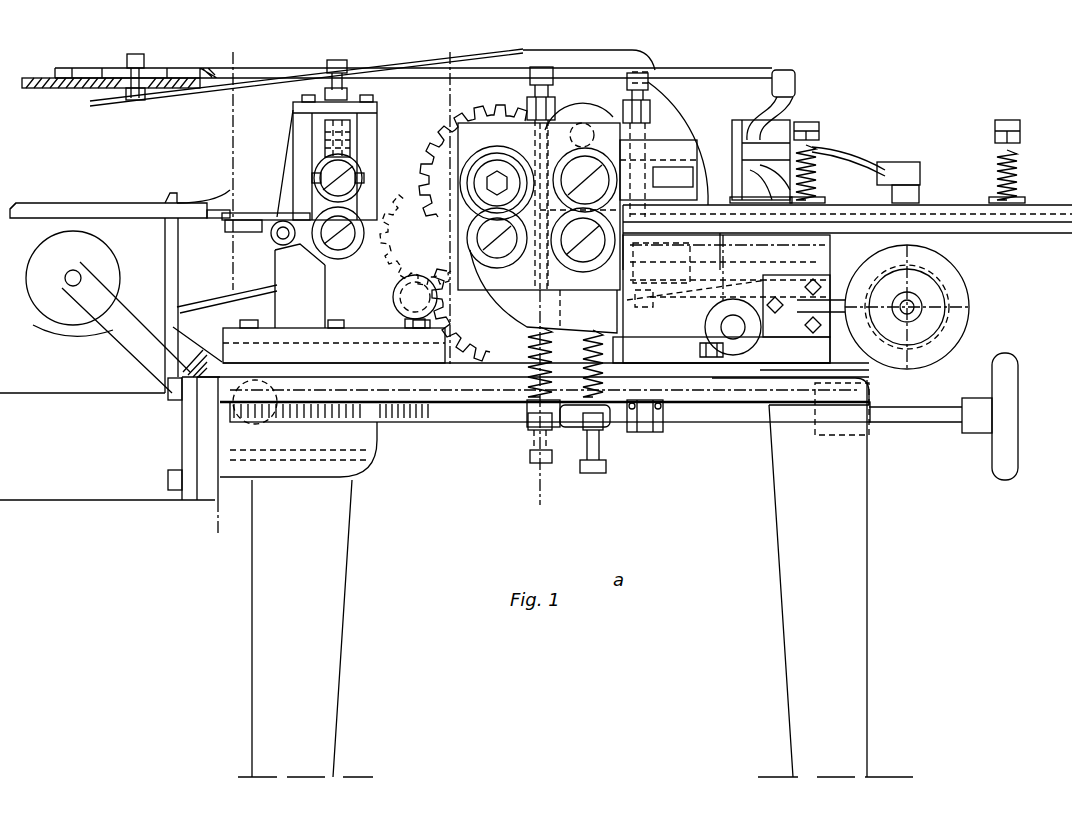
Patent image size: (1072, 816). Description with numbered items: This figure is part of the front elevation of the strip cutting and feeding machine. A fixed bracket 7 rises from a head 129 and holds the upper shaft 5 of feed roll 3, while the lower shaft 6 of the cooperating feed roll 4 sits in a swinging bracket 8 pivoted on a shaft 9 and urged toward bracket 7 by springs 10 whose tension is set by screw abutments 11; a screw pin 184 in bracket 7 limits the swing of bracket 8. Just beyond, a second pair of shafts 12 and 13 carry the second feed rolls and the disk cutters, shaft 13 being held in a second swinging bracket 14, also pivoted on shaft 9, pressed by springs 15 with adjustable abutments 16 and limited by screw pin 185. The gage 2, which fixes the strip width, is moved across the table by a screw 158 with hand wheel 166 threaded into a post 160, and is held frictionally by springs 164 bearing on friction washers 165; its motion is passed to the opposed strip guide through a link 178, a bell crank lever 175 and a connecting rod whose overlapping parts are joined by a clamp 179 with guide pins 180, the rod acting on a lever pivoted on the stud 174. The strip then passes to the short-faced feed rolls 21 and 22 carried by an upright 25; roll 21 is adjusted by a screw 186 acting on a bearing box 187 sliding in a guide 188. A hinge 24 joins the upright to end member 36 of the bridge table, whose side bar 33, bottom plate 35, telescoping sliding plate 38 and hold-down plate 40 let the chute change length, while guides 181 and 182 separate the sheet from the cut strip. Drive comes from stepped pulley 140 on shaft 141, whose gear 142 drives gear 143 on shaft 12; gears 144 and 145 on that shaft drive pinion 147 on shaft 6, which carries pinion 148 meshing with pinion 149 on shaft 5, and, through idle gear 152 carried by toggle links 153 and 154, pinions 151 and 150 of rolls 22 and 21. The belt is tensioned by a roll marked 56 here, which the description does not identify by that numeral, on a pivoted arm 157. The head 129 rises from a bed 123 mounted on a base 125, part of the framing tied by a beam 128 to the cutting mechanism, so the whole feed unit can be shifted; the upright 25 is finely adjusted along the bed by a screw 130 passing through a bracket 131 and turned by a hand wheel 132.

The gage 2 is at (937, 204).
The feed roll 3 is at (622, 162).
The feed roll 4 is at (582, 310).
The shaft 5 is at (575, 170).
The shaft 6 is at (443, 64).
The fixed bracket 7 is at (224, 526).
The swinging bracket 8 is at (565, 362).
The shaft 9 is at (733, 327).
The springs 10 is at (613, 343).
The screw abutments 11 is at (608, 470).
The shaft 12 is at (450, 173).
The shaft 13 is at (540, 327).
The second swinging bracket 14 is at (503, 317).
The springs 15 is at (530, 353).
The adjustable abutments 16 is at (537, 437).
The feed roll 21 is at (357, 157).
The feed roll 22 is at (300, 289).
The hinge 24 is at (312, 240).
The upright 25 is at (285, 262).
The side bar 33 is at (67, 208).
The bottom plate 35 is at (45, 222).
The end member 36 is at (222, 226).
The sliding plate 38 is at (309, 157).
The transverse plate 40 is at (205, 200).
The pulley 56 is at (33, 300).
The bed 123 is at (810, 372).
The base 125 is at (749, 397).
The beam 128 is at (85, 503).
The head 129 is at (812, 250).
The screw 130 is at (472, 417).
The bracket 131 is at (647, 430).
The hand wheel 132 is at (999, 452).
The stepped pulley 140 is at (478, 262).
The shaft 141 is at (622, 112).
The gear wheel 142 is at (641, 81).
The gear wheel 143 is at (455, 140).
The gear 144 is at (460, 183).
The gear 145 is at (515, 70).
The pinion 147 is at (708, 300).
The pinion 148 is at (671, 236).
The pinion 149 is at (673, 178).
The pinion 150 is at (312, 178).
The pinion 151 is at (300, 285).
The idle gear 152 is at (415, 240).
The toggle link 153 is at (410, 270).
The toggle link 154 is at (427, 302).
The pivoted arm 157 is at (125, 330).
The screw 158 is at (915, 312).
The post 160 is at (925, 245).
The springs 164 is at (819, 157).
The friction washers 165 is at (824, 200).
The hand wheel 166 is at (958, 313).
The stud 174 is at (797, 74).
The bell crank lever 175 is at (712, 122).
The link 178 is at (905, 165).
The clamp 179 is at (134, 102).
The guide pins 180 is at (77, 88).
The guide 181 is at (283, 223).
The guide 182 is at (270, 236).
The screw pin 184 is at (687, 74).
The screw pin 185 is at (530, 106).
The screw 186 is at (327, 65).
The bearing box 187 is at (323, 147).
The guide 188 is at (300, 116).